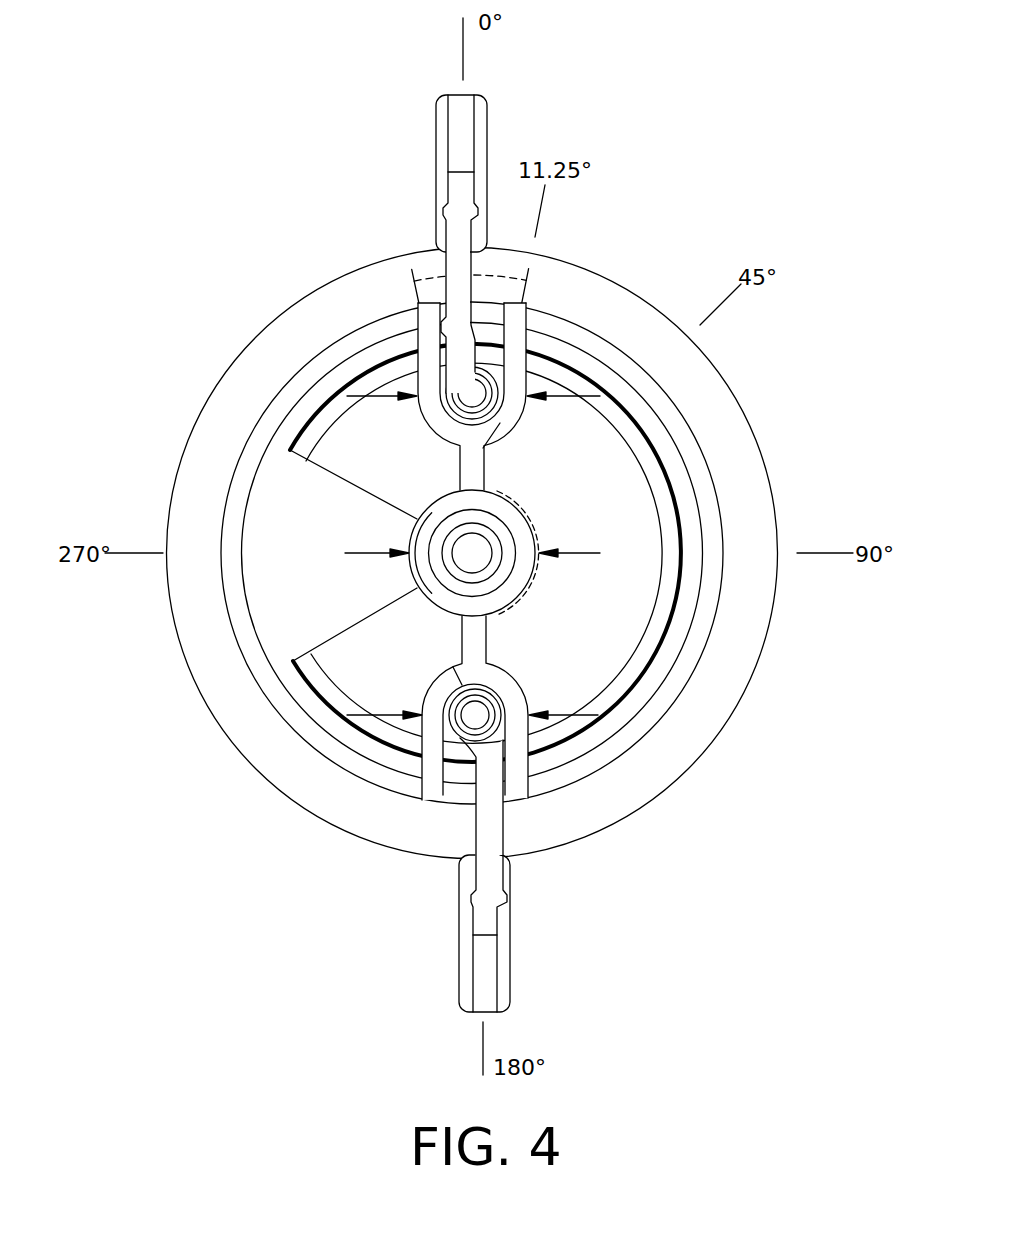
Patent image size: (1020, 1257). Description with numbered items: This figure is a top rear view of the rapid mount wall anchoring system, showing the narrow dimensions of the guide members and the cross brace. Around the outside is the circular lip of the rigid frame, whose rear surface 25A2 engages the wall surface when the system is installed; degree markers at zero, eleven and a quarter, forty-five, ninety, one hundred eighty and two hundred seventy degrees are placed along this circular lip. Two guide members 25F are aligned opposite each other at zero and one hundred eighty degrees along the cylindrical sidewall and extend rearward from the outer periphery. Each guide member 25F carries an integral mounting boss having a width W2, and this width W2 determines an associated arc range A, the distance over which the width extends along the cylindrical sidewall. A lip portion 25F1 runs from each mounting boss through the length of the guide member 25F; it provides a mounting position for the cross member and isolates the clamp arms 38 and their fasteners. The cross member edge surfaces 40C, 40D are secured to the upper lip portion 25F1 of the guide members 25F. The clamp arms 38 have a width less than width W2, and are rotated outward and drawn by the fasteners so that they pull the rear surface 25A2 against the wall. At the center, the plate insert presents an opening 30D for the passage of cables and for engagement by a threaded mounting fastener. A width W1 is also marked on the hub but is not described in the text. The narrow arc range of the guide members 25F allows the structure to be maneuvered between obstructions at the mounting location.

The clamp arms 38 is at (443, 123).
The rear surface 25A2 is at (384, 288).
The arc range A is at (428, 273).
The guide members 25F is at (487, 420).
The lip portion 25F1 is at (424, 418).
The opening 30D is at (345, 599).
The cross member edge surface 40C is at (486, 446).
The cross member edge surface 40D is at (460, 615).
The hub width W1 is at (475, 567).
The width W2 is at (473, 555).